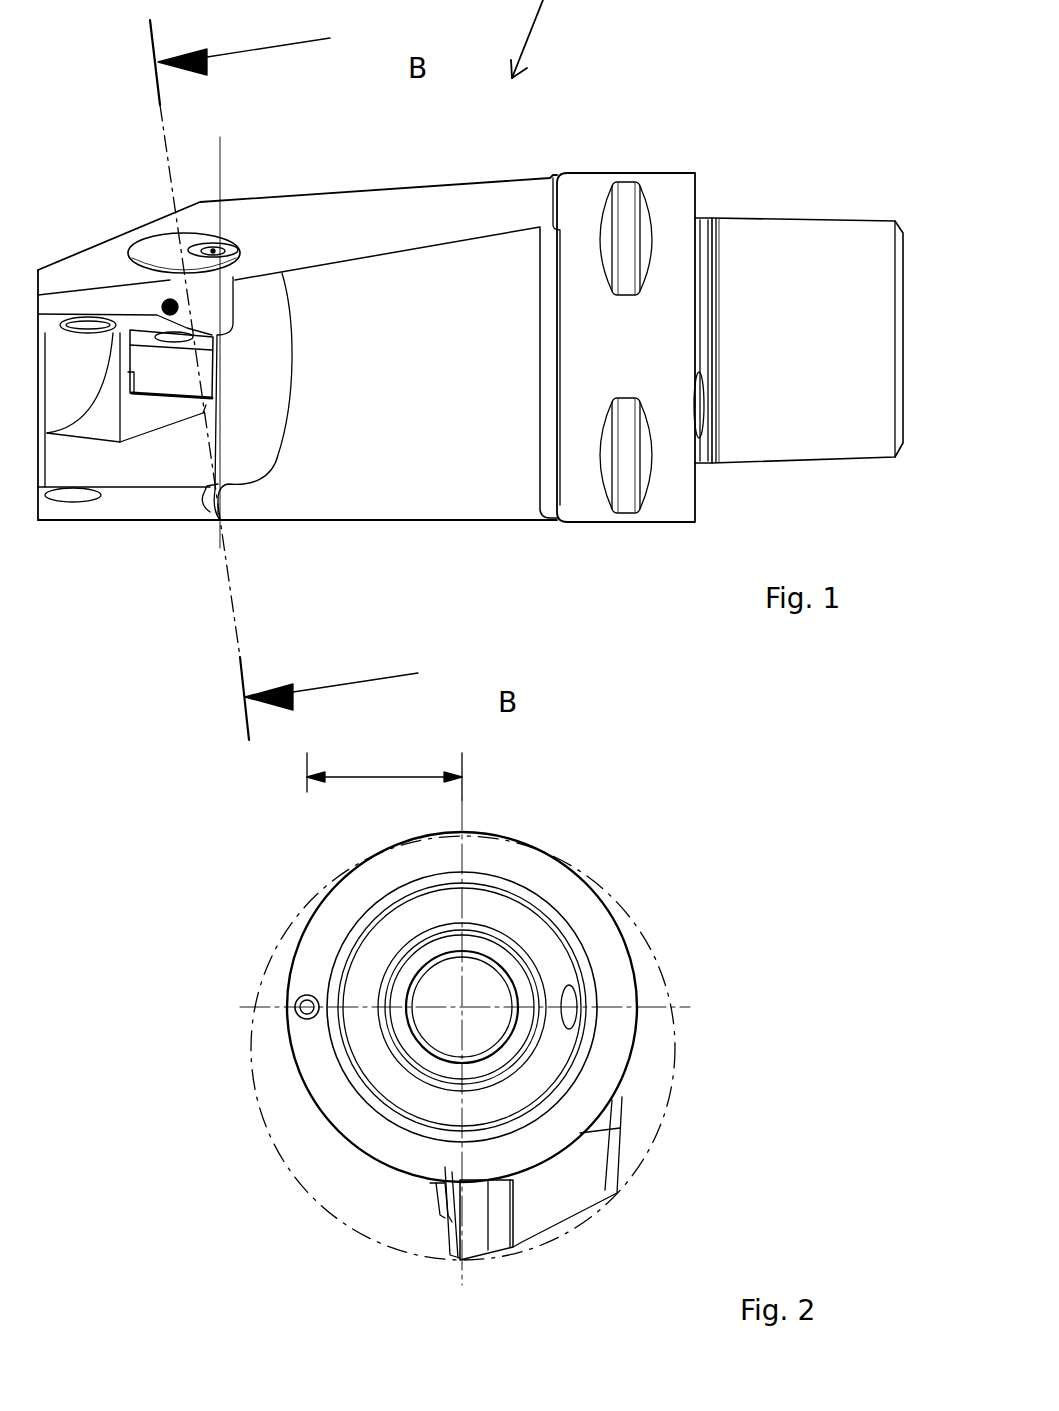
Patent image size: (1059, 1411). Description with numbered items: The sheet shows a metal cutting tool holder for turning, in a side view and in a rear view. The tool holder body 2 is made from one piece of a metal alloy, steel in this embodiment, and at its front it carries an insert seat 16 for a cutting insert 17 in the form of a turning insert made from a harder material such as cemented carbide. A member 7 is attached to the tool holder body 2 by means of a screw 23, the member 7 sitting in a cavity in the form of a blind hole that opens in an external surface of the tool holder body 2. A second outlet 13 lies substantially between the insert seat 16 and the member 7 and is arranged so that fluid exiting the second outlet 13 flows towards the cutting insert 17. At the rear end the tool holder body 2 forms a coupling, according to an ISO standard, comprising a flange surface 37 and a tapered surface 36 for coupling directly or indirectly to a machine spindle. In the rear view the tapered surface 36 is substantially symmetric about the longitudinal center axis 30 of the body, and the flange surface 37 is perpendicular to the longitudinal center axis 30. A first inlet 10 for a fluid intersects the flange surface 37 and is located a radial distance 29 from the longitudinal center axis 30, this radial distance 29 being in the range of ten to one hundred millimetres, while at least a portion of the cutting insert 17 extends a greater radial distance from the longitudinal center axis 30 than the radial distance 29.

In FIG. 1, the tool holder body 2 is at (485, 270).
In FIG. 1, the member 7 is at (153, 252).
In FIG. 2, the first inlet 10 is at (297, 1000).
In FIG. 1, the second outlet 13 is at (163, 305).
In FIG. 1, the insert seat 16 is at (160, 358).
In FIG. 1, the cutting insert 17 is at (180, 358).
In FIG. 2, the cutting insert 17 is at (480, 1242).
In FIG. 1, the screw 23 is at (200, 250).
In FIG. 2, the radial distance 29 is at (384, 767).
In FIG. 2, the longitudinal center axis 30 is at (463, 1008).
In FIG. 1, the tapered surface 36 is at (787, 282).
In FIG. 2, the tapered surface 36 is at (513, 893).
In FIG. 1, the flange surface 37 is at (697, 193).
In FIG. 2, the flange surface 37 is at (502, 858).